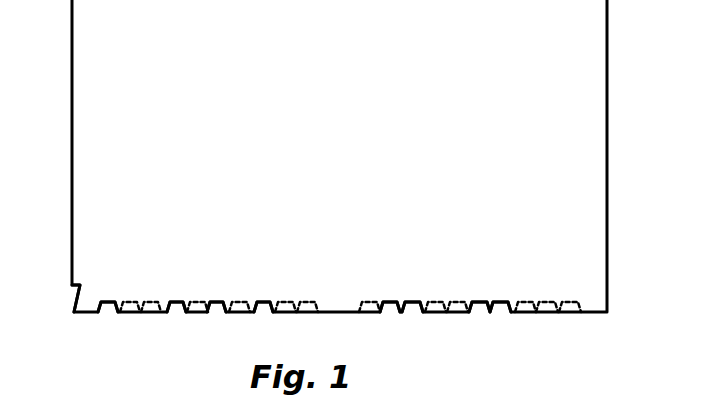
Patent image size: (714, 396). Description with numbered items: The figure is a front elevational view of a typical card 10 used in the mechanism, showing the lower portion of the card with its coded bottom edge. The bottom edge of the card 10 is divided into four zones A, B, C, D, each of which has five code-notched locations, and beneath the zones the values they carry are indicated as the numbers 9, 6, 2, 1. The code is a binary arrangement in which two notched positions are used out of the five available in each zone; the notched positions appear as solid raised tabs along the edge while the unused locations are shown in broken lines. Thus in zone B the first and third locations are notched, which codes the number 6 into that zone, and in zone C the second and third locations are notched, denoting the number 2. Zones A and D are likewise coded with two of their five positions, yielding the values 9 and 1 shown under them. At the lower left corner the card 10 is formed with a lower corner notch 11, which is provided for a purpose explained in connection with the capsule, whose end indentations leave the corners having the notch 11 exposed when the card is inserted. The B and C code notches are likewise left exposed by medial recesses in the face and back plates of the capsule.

The card 10 is at (592, 172).
The lower corner notch 11 is at (71, 307).
The zone A is at (152, 294).
The zone B is at (262, 294).
The zone C is at (413, 294).
The zone D is at (525, 294).
The tab group value 9 is at (207, 292).
The number six code 6 is at (318, 292).
The number two code 2 is at (468, 292).
The tab group value 1 is at (470, 292).